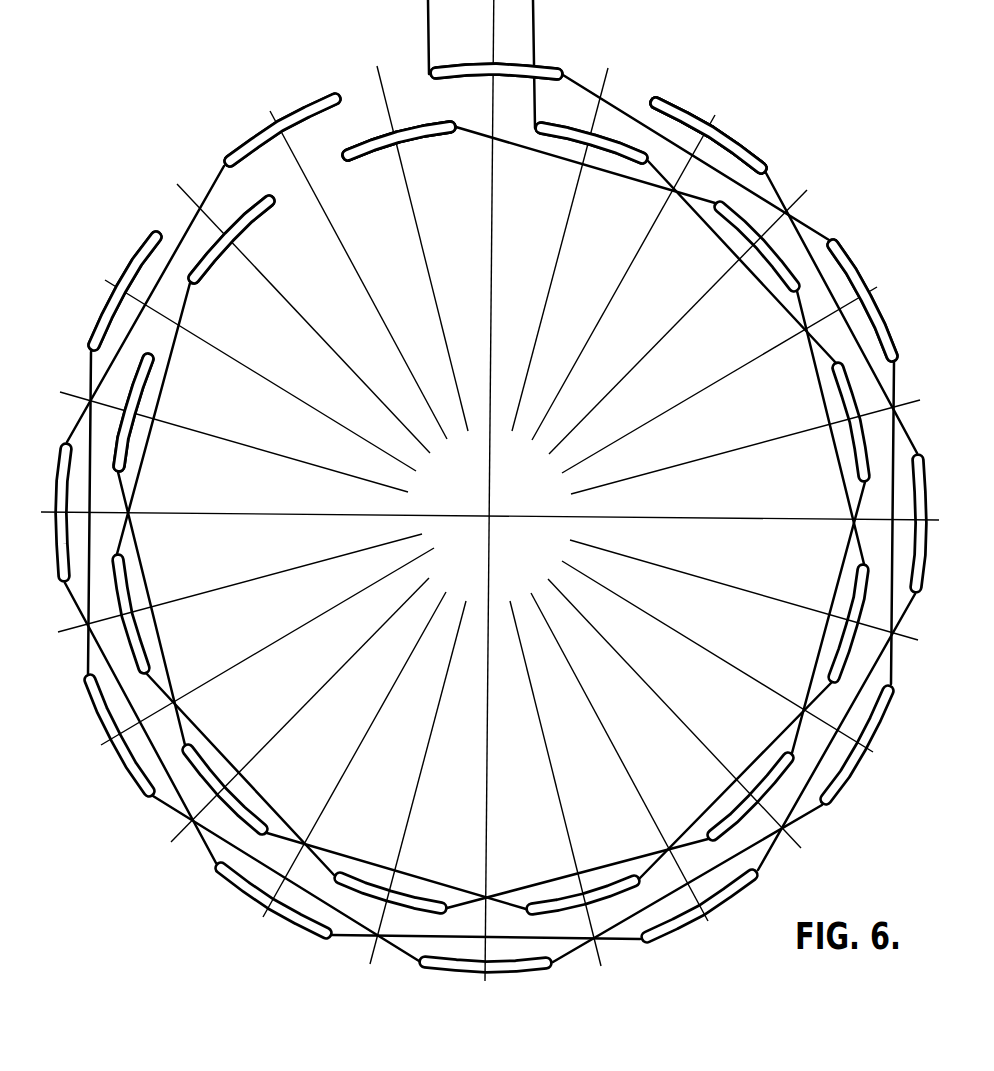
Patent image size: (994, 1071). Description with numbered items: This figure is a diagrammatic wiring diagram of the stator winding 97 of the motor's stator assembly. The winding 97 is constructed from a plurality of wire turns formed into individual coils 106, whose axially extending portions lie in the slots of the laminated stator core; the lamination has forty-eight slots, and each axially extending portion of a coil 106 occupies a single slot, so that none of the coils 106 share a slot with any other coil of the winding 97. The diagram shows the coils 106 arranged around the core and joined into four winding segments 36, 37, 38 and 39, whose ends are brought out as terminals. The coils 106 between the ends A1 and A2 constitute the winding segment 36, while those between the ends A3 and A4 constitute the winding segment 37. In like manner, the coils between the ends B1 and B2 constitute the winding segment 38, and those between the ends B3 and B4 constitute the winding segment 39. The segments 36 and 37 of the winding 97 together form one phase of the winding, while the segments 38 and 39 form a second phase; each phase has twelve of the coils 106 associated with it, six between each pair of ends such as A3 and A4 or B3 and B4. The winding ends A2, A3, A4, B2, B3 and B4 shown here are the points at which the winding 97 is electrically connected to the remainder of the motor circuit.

The winding segment 36 is at (496, 57).
The winding segment 37 is at (708, 122).
The winding segment 38 is at (589, 127).
The winding segment 39 is at (394, 136).
The stator winding 97 is at (690, 112).
The coil 106 is at (838, 246).
The winding end A2 is at (160, 231).
The winding end A3 is at (650, 101).
The winding end A4 is at (342, 97).
The winding end B2 is at (274, 197).
The winding end B3 is at (343, 157).
The winding end B4 is at (150, 354).